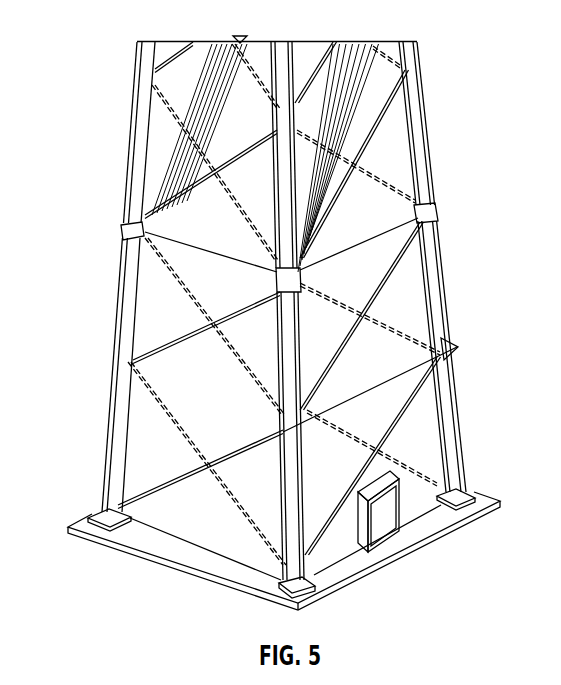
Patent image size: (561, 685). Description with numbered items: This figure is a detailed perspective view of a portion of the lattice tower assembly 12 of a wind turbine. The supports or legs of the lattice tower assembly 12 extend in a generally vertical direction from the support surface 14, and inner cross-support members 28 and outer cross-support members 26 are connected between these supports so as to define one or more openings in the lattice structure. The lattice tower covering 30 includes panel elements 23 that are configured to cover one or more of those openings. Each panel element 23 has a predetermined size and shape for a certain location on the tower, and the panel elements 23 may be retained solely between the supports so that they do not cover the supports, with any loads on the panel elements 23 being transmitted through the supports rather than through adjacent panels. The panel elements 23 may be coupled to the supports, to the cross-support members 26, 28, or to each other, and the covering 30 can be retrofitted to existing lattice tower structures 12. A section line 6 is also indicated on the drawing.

The lattice tower assembly 12 is at (112, 148).
The support surface 14 is at (423, 533).
The panel element 23 is at (378, 67).
The outer cross-support member 26 is at (400, 263).
The inner cross-support member 28 is at (427, 323).
The lattice tower covering 30 is at (396, 157).
The section line 6- 6 is at (270, 437).